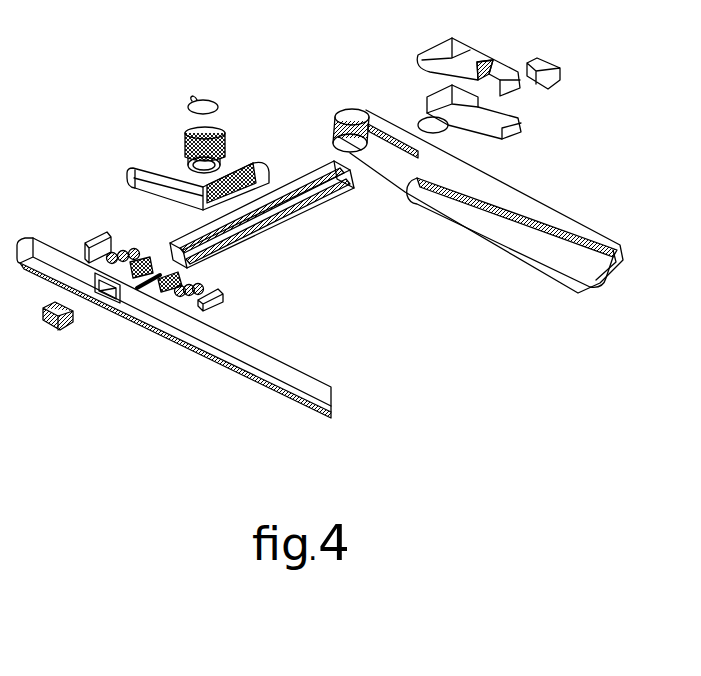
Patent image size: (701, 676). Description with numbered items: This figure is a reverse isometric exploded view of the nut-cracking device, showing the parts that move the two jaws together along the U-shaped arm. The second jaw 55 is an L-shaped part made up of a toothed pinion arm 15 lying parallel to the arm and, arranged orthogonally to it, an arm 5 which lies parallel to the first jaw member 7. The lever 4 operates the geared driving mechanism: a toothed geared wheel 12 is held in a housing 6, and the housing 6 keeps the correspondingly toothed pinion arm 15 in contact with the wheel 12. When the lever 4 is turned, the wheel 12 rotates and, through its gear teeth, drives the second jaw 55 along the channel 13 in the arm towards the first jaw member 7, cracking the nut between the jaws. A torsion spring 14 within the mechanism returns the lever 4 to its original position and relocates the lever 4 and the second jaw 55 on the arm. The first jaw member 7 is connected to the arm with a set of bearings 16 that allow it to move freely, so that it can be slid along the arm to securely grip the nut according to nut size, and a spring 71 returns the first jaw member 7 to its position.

The lever 4 is at (401, 194).
The arm 5 is at (155, 174).
The housing 6 is at (486, 88).
The first jaw member 7 is at (252, 350).
The toothed geared wheel 12 is at (186, 144).
The channel 13 is at (296, 210).
The torsion spring 14 is at (218, 97).
The pinion arm 15 is at (250, 161).
The set of bearings 16 is at (80, 231).
The second jaw 55 is at (103, 161).
The spring 71 is at (142, 287).